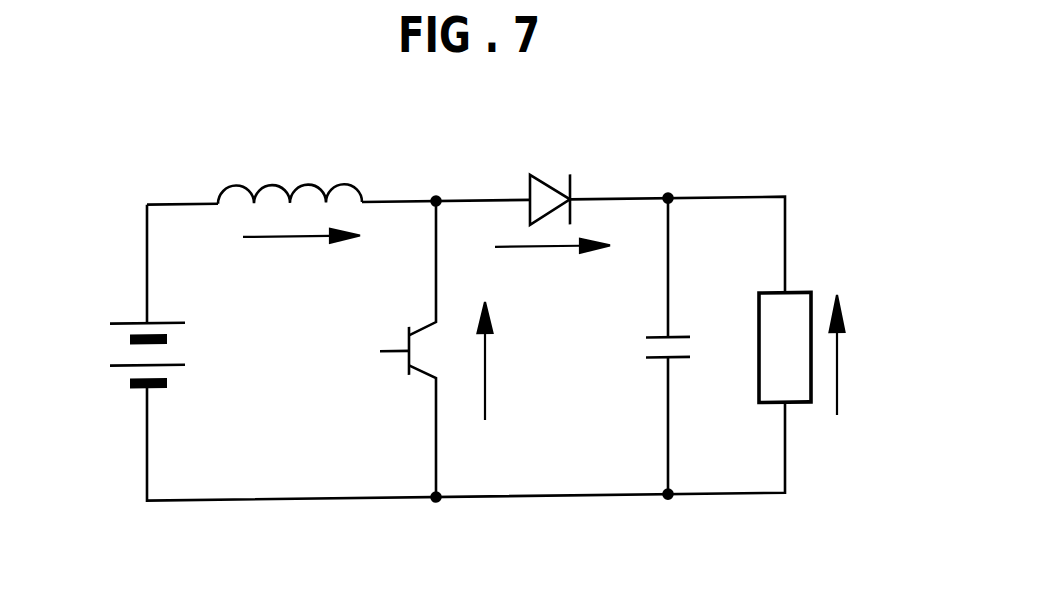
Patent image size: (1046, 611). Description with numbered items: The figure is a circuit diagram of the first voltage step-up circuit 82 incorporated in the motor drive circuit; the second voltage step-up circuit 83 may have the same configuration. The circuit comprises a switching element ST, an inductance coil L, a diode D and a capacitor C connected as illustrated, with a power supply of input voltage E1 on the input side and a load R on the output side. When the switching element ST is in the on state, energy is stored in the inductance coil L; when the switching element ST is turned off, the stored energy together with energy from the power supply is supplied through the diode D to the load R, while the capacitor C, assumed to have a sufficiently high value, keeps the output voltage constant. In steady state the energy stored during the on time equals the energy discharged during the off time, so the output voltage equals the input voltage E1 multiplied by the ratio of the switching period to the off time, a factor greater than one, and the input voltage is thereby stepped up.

The first voltage step-up circuit 82 is at (677, 176).
The second voltage step-up circuit 83 is at (462, 319).
The input voltage E1 is at (83, 424).
The inductance coil L is at (290, 171).
The switching element ST is at (407, 349).
The diode D is at (550, 181).
The capacitor C is at (643, 346).
The load R is at (764, 347).